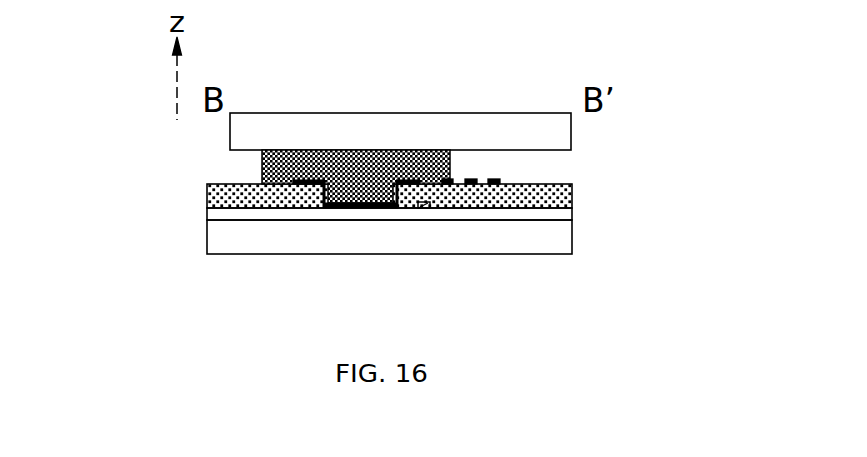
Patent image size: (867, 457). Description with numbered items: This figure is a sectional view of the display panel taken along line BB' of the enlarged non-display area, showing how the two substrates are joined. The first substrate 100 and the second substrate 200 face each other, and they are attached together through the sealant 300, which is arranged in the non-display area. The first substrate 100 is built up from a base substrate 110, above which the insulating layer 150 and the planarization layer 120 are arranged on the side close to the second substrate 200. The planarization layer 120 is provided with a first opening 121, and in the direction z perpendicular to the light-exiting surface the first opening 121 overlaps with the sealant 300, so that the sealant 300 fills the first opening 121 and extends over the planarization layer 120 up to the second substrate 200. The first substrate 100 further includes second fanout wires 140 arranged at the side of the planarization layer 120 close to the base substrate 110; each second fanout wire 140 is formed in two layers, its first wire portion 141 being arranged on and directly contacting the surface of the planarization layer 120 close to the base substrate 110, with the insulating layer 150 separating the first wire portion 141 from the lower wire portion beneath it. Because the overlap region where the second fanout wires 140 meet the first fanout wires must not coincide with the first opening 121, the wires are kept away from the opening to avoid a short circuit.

The first substrate 100 is at (372, 265).
The base substrate 110 is at (232, 238).
The planarization layer 120 is at (232, 201).
The first opening 121 is at (322, 207).
The second fanout wire 140 is at (434, 247).
The first wire portion 141 is at (422, 207).
The insulating layer 150 is at (533, 213).
The second substrate 200 is at (533, 137).
The sealant 300 is at (285, 168).